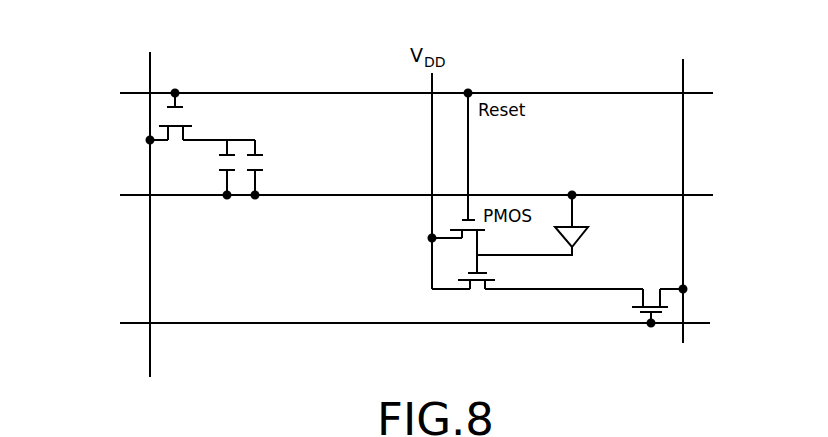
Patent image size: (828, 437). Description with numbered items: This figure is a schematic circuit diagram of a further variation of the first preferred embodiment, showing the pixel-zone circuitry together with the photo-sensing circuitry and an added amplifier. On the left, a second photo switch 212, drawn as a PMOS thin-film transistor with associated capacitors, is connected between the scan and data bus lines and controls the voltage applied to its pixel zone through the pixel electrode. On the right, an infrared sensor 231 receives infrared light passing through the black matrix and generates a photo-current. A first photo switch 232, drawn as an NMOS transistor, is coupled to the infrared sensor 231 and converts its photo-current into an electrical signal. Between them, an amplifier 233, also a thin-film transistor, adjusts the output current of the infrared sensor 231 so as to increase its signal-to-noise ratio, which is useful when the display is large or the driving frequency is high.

The second photo switch 212 is at (145, 123).
The infrared sensor 231 is at (585, 222).
The first photo switch 232 is at (669, 320).
The amplifier 233 is at (499, 325).